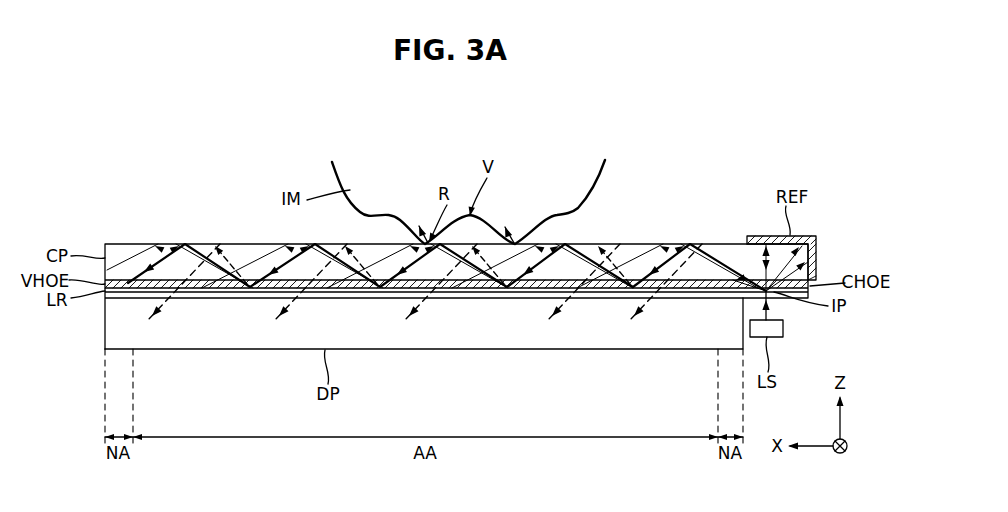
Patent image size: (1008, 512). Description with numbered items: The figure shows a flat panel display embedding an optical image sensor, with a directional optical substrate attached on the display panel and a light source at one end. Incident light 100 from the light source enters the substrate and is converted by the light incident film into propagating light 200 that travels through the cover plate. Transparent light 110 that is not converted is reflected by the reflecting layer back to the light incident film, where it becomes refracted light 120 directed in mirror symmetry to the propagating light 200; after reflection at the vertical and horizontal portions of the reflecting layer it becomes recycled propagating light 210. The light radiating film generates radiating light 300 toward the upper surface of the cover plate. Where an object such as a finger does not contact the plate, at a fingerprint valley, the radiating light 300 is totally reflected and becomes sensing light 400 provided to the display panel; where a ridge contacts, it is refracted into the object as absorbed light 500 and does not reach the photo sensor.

The incident light 100 is at (772, 311).
The transparent light 110 is at (743, 278).
The refracted light 120 is at (810, 272).
The propagating light 200 is at (662, 278).
The recycled propagating light 210 is at (645, 276).
The radiating light 300 is at (626, 282).
The sensing light 400 is at (548, 302).
The absorbed light 500 is at (413, 240).